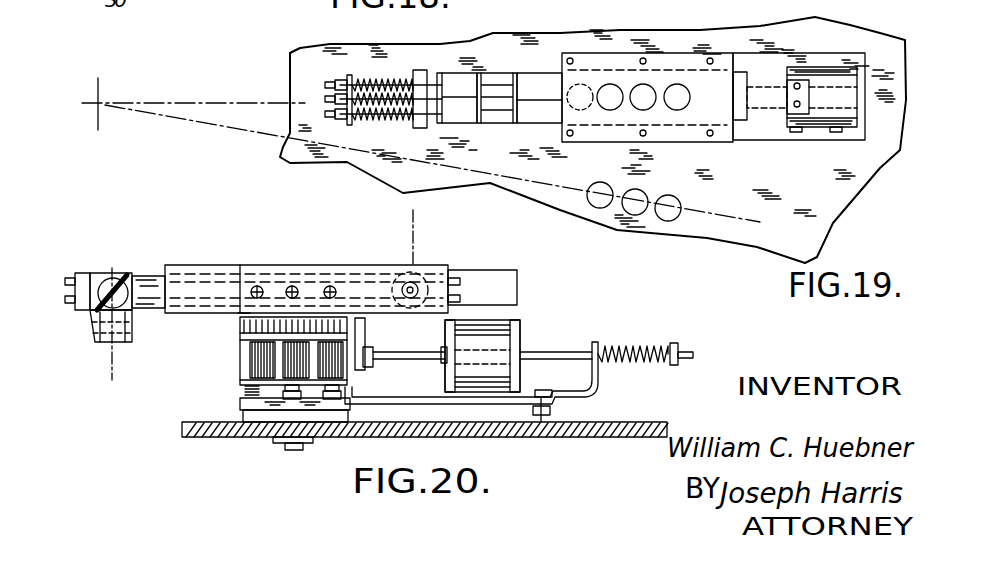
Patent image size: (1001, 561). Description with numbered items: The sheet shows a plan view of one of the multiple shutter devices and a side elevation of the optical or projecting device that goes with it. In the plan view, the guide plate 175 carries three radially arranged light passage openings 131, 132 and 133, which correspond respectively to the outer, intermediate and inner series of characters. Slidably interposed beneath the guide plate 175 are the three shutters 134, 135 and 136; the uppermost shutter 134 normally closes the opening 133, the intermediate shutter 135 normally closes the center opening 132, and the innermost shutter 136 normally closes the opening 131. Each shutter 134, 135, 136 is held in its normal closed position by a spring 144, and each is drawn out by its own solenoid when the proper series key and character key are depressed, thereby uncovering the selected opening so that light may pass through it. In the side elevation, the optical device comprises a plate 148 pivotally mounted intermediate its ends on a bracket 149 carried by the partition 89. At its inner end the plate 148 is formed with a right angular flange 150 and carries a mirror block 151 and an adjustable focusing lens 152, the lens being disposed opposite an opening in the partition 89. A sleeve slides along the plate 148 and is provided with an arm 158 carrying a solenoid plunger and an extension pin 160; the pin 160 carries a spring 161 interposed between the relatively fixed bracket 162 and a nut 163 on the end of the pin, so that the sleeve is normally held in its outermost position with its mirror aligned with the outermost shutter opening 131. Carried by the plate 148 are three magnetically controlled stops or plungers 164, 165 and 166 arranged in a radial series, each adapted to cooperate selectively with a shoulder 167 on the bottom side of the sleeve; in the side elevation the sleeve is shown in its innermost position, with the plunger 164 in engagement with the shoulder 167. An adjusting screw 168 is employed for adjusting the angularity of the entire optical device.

In FIG. 19, the guide plate 175 is at (582, 58).
In FIG. 19, the light passage opening 133 is at (605, 84).
In FIG. 19, the light passage opening 132 is at (642, 84).
In FIG. 19, the light passage opening 131 is at (685, 84).
In FIG. 19, the spring 144 is at (362, 80).
In FIG. 19, the innermost shutter 136 is at (455, 116).
In FIG. 19, the intermediate shutter 135 is at (494, 117).
In FIG. 19, the uppermost shutter 134 is at (547, 116).
In FIG. 20, the plate 148 is at (515, 291).
In FIG. 20, the right angular flange 150 is at (82, 267).
In FIG. 20, the mirror block 151 is at (113, 275).
In FIG. 20, the adjustable focusing lens 152 is at (132, 335).
In FIG. 20, the magnetically controlled plunger 164 is at (263, 290).
In FIG. 20, the magnetically controlled plunger 165 is at (300, 296).
In FIG. 20, the magnetically controlled plunger 166 is at (337, 297).
In FIG. 20, the shoulder 167 is at (238, 314).
In FIG. 20, the bracket 149 is at (243, 414).
In FIG. 20, the partition 89 is at (667, 411).
In FIG. 20, the arm 158 is at (366, 344).
In FIG. 20, the extension pin 160 is at (567, 348).
In FIG. 20, the spring 161 is at (627, 352).
In FIG. 20, the bracket 162 is at (598, 378).
In FIG. 20, the nut 163 is at (680, 350).
In FIG. 20, the adjusting screw 168 is at (553, 411).